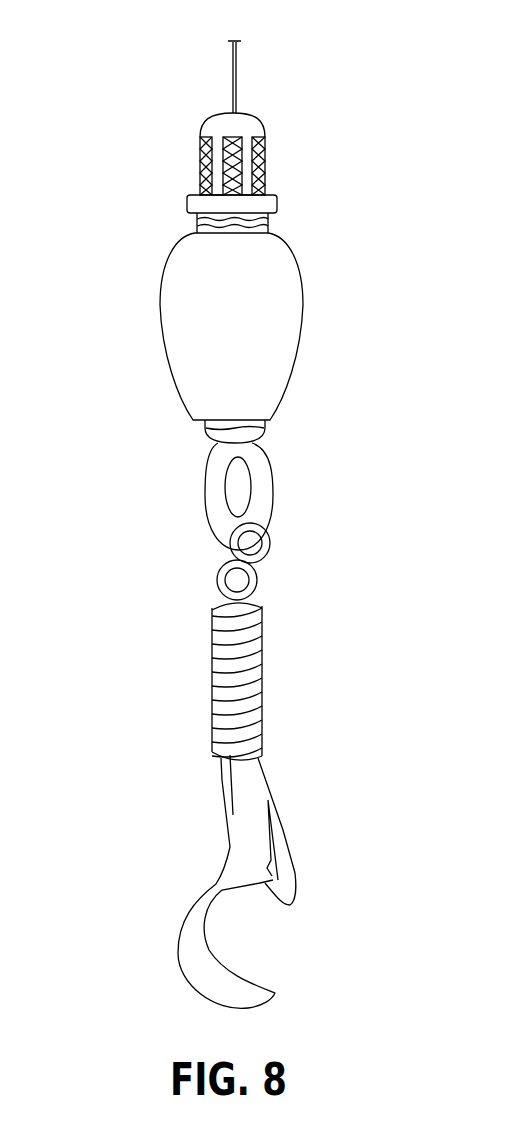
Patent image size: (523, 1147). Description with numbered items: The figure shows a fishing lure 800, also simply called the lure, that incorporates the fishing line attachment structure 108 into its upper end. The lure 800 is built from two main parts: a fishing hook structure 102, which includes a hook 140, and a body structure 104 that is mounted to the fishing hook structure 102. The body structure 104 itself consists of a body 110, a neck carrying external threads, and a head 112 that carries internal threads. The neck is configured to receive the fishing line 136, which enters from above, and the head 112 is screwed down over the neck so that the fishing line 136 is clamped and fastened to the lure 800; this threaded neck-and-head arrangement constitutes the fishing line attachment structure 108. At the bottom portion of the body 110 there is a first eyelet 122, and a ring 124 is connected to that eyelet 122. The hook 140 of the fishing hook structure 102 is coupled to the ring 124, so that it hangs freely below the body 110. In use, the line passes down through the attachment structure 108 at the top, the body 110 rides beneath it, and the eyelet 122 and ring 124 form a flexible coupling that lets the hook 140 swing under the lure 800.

The fishing line 136 is at (237, 68).
The head 112 is at (263, 146).
The fishing line attachment structure 108 is at (292, 185).
The fishing lure 800 is at (331, 238).
The body structure 104 is at (209, 338).
The body 110 is at (280, 313).
The first eyelet 122 is at (262, 480).
The ring 124 is at (277, 548).
The fishing hook structure 102 is at (283, 713).
The hook 140 is at (297, 872).